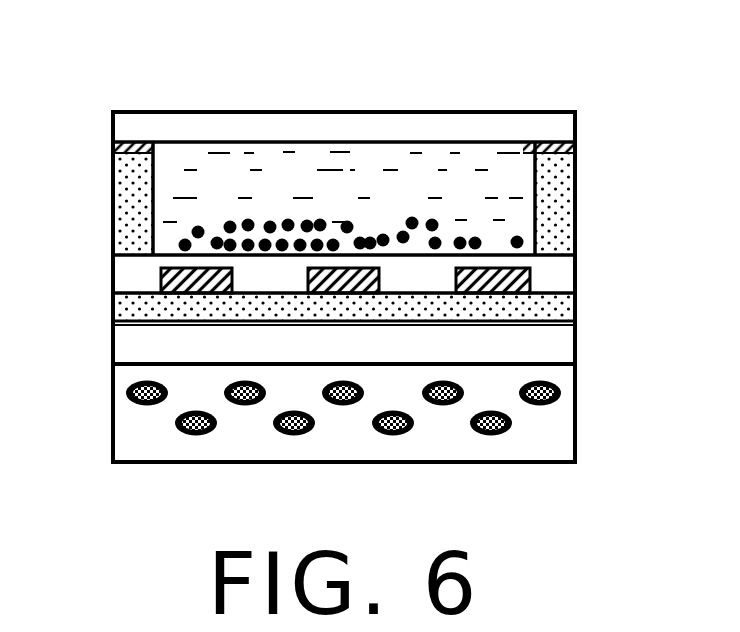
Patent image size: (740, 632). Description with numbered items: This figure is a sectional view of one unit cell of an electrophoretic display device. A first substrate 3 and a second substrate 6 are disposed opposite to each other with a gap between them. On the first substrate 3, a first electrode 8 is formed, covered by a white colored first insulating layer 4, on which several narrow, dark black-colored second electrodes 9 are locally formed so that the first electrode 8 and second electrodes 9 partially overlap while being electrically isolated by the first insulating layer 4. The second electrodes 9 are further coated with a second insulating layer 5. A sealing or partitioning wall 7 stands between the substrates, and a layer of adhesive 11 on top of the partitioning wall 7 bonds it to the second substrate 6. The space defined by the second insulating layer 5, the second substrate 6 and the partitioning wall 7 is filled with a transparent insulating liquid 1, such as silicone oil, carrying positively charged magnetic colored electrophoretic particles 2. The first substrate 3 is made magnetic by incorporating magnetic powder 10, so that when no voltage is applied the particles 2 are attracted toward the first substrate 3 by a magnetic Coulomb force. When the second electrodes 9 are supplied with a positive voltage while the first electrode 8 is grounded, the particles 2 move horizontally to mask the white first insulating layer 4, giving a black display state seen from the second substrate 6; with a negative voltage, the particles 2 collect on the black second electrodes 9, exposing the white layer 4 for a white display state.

The insulating liquid 1 is at (380, 167).
The magnetic colored electrophoretic particles 2 is at (268, 223).
The first substrate 3 is at (558, 437).
The first insulating layer 4 is at (558, 310).
The second insulating layer 5 is at (558, 273).
The second substrate 6 is at (487, 127).
The partitioning wall 7 is at (577, 204).
The first electrode 8 is at (558, 346).
The second electrode 9 is at (160, 283).
The magnetic powder 10 is at (558, 390).
The adhesive 11 is at (577, 147).